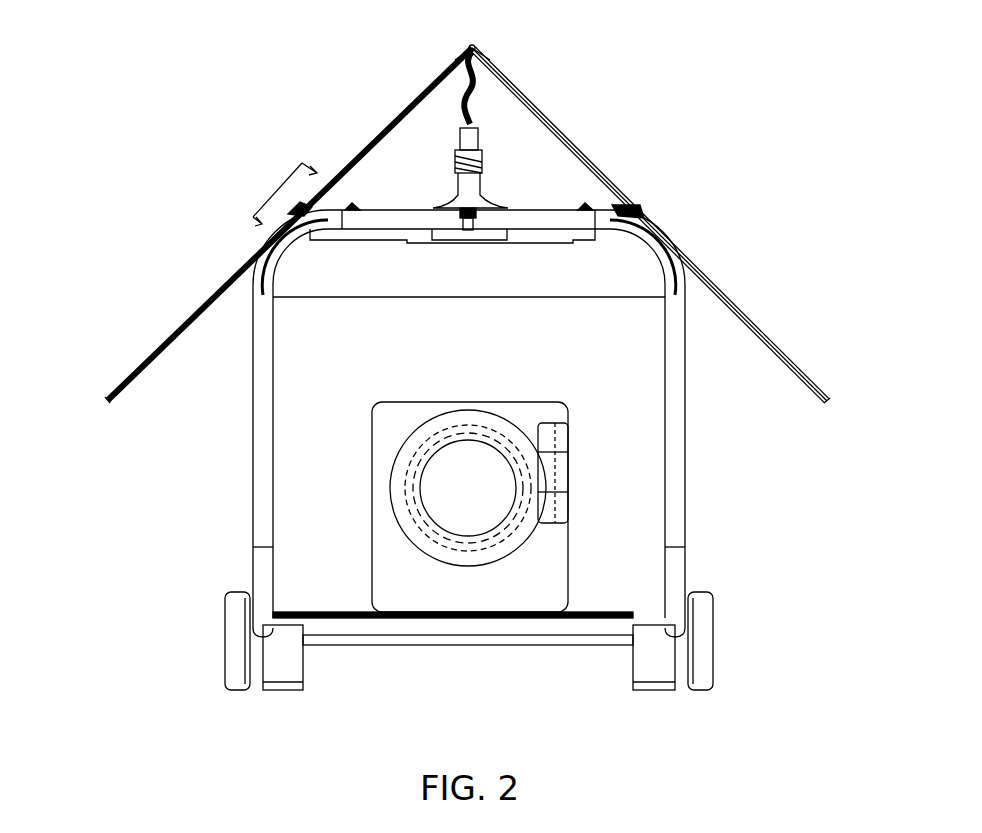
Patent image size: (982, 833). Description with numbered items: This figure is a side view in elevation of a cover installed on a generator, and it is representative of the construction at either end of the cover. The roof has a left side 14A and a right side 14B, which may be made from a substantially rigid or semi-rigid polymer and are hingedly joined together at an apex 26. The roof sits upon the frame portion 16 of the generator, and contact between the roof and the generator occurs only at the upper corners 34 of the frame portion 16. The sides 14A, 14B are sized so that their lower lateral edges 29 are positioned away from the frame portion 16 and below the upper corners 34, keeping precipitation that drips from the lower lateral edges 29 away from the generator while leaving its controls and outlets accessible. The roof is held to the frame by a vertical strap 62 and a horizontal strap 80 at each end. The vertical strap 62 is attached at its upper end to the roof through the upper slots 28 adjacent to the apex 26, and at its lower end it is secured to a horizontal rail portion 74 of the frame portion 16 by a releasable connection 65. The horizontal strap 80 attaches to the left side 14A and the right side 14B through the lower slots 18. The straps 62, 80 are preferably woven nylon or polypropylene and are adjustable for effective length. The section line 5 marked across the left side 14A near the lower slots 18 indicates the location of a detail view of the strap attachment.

The frame portion 16 is at (685, 530).
The left side 14A is at (420, 98).
The right side 14B is at (520, 96).
The lower slots 18 is at (300, 210).
The apex 26 is at (472, 46).
The upper slots 28 is at (464, 44).
The lower lateral edges 29 is at (100, 400).
The upper corners 34 is at (290, 240).
The vertical strap 62 is at (478, 118).
The releasable connection 65 is at (440, 160).
The horizontal rail portion 74 is at (540, 222).
The horizontal strap 80 is at (370, 207).
The section line for FIG. 5 is at (274, 182).